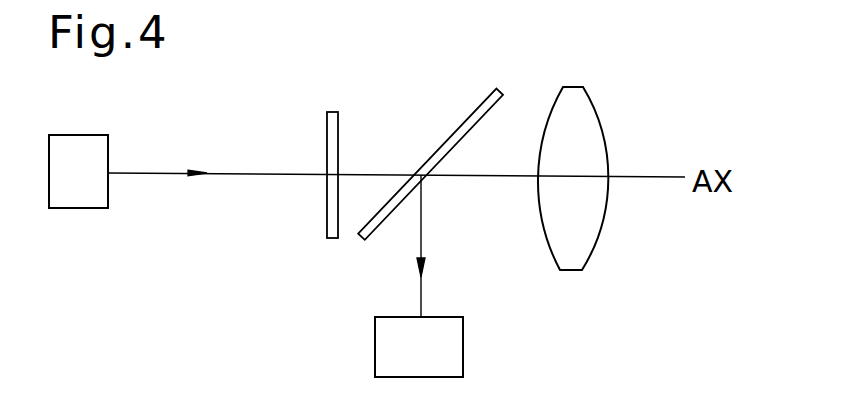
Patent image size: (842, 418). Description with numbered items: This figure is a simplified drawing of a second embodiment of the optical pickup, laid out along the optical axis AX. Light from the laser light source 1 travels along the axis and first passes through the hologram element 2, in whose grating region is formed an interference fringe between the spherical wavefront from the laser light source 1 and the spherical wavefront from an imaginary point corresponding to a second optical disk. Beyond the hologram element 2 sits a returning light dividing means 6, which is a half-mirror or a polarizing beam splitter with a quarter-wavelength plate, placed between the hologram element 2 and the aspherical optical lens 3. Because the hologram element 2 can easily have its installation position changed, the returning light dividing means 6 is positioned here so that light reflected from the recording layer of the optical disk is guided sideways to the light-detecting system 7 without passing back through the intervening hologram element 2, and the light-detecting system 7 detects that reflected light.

The laser light source 1 is at (87, 200).
The hologram element 2 is at (338, 123).
The optical lens 3 is at (578, 262).
The returning light dividing means 6 is at (452, 137).
The light-detecting system 7 is at (455, 356).